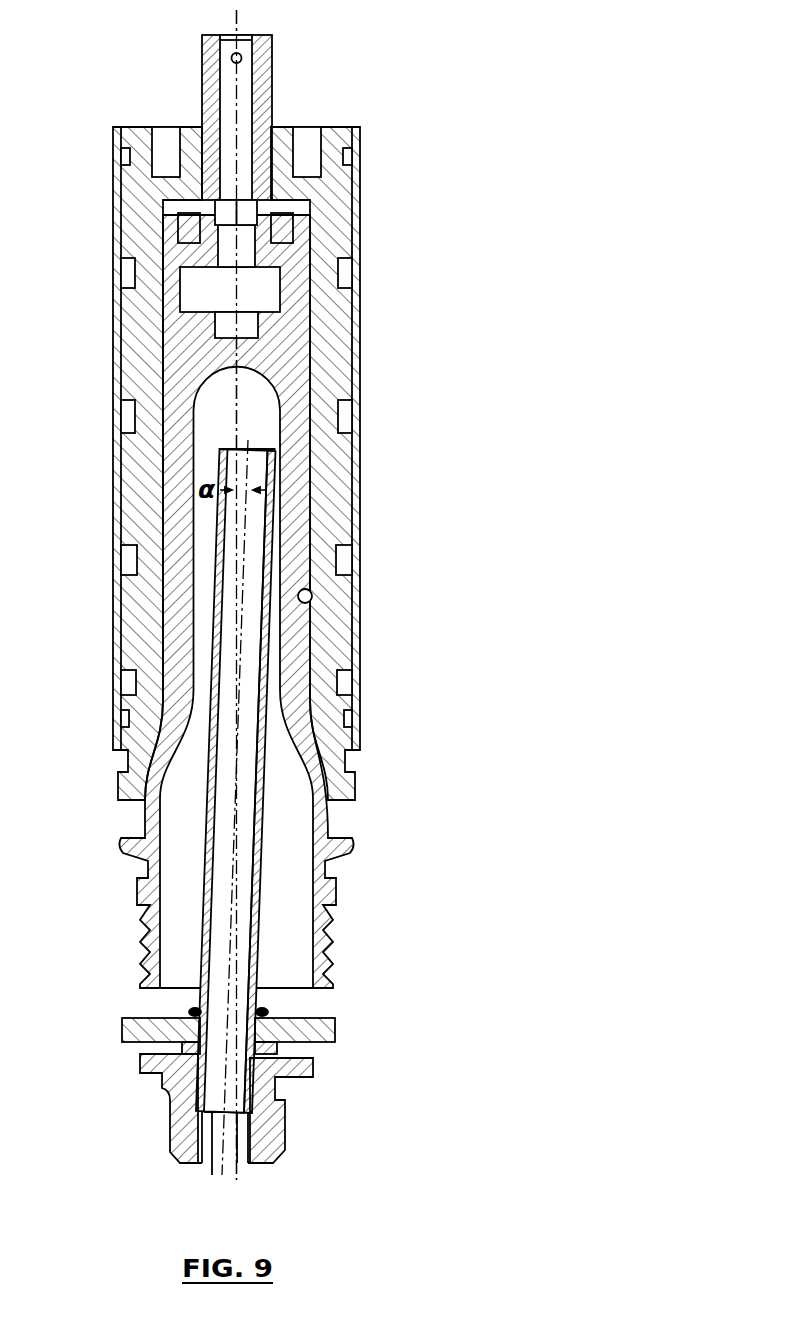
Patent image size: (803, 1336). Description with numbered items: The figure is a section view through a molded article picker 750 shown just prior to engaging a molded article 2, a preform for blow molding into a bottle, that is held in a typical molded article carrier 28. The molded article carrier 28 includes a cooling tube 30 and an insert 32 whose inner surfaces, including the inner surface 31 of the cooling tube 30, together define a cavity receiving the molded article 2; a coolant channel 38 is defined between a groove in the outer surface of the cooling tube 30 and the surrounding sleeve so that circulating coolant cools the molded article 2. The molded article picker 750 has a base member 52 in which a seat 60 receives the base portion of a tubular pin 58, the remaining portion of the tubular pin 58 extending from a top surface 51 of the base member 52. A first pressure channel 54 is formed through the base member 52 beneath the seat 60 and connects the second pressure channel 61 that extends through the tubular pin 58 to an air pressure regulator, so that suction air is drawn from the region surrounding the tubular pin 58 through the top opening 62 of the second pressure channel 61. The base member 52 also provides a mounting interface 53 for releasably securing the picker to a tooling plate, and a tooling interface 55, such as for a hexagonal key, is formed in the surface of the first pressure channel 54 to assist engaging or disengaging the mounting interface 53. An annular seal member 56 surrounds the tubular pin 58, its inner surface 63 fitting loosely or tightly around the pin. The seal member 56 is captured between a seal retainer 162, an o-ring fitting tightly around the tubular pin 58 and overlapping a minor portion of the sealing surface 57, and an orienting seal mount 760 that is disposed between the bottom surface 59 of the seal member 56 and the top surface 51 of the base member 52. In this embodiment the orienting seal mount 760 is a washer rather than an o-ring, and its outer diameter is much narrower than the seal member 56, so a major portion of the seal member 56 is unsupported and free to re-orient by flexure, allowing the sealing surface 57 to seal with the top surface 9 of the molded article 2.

The molded article carrier 28 is at (393, 135).
The cooling tube 30 is at (337, 322).
The insert 32 is at (298, 348).
The top opening 62 is at (227, 448).
The molded article 2 is at (295, 515).
The inner surface 31 is at (312, 598).
The coolant channel 38 is at (345, 680).
The second pressure channel 61 is at (248, 817).
The tubular pin 58 is at (263, 887).
The inner surface 63 is at (237, 1033).
The top surface 9 is at (317, 990).
The top surface 51 is at (287, 1040).
The sealing surface 57 is at (333, 1021).
The seal member 56 is at (335, 1031).
The seal retainer 162 is at (193, 1010).
The orienting seal mount 760 is at (122, 1021).
The mounting interface 53 is at (226, 1128).
The bottom surface 59 is at (313, 1063).
The base member 52 is at (283, 1078).
The seat 60 is at (243, 1103).
The tooling interface 55 is at (240, 1148).
The first pressure channel 54 is at (193, 1158).
The molded article picker 750 is at (343, 1160).